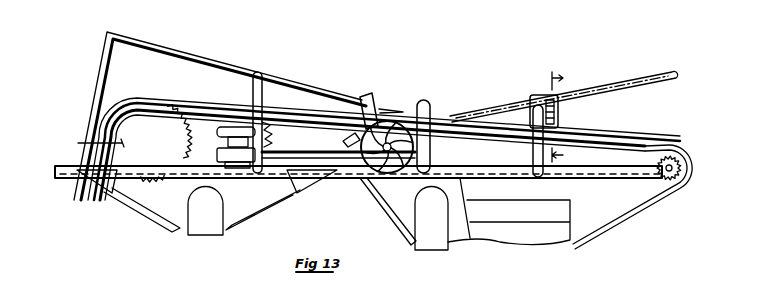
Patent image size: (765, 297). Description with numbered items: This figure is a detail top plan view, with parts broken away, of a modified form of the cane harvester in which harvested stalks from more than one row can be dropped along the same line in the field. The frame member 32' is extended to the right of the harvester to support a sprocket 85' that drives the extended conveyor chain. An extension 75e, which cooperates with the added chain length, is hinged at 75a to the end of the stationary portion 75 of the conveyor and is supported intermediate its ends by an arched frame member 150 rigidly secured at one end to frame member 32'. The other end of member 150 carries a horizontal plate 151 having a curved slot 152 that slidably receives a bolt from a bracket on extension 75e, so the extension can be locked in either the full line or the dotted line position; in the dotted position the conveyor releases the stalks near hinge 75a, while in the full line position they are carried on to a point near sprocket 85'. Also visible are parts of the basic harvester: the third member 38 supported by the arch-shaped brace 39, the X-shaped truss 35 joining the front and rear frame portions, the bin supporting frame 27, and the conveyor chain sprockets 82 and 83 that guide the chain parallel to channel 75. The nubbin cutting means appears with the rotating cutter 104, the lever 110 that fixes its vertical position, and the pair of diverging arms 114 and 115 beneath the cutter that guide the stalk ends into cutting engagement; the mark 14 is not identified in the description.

The third member 38 is at (228, 63).
The brace 39 is at (262, 86).
The channel member 75 is at (340, 112).
The hinge 75a is at (447, 118).
The extension 75e is at (640, 86).
The sprocket 82 is at (91, 142).
The sprocket 83 is at (268, 125).
The lever 110 is at (290, 150).
The arm 115 is at (347, 140).
The arm 114 is at (380, 105).
The arched frame member 150 is at (533, 152).
The horizontal plate 151 is at (535, 97).
The curved slot 152 is at (563, 105).
The dimension 14 is at (567, 117).
The sprocket 85' is at (646, 196).
The frame member 32' is at (358, 190).
The X-shaped truss 35 is at (148, 213).
The rotating cutter 104 is at (386, 180).
The bin supporting frame 27 is at (547, 237).